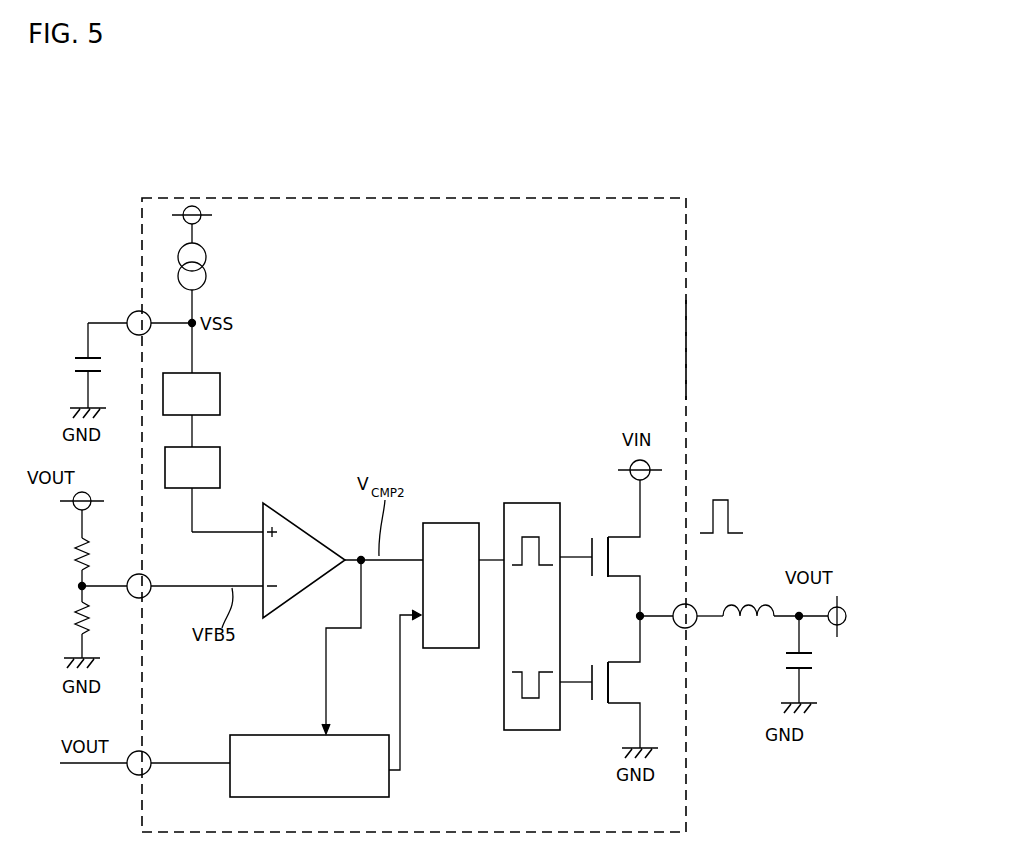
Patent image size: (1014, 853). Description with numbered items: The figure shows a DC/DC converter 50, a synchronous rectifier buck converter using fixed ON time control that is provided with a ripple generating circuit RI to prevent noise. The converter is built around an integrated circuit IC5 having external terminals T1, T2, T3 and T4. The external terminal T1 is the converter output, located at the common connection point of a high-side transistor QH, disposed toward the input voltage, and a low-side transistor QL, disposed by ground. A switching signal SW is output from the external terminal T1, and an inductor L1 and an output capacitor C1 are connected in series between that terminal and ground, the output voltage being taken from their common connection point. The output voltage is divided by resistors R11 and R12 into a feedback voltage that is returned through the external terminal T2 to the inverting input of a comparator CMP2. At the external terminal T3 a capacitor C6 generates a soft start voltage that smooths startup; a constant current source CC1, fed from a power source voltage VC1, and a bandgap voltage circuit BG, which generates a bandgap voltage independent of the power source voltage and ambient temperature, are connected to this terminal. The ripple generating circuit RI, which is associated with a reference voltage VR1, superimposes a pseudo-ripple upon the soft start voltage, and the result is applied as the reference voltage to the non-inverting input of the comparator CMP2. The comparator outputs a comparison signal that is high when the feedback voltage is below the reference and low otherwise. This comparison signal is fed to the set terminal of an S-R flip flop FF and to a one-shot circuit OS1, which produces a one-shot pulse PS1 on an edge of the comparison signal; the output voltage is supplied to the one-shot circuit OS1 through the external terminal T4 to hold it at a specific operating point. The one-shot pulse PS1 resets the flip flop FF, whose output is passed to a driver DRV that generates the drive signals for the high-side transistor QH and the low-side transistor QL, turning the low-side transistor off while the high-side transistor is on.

The DC/DC converter 50 is at (412, 188).
The integrated circuit IC5 is at (686, 349).
The power source voltage VC1 is at (211, 224).
The constant current source CC1 is at (218, 308).
The external terminal T3 is at (140, 312).
The capacitor C6 is at (71, 370).
The bandgap voltage circuit BG is at (220, 395).
The reference voltage VR1 is at (220, 459).
The ripple generating circuit RI is at (226, 534).
The resistor R11 is at (60, 548).
The resistor R12 is at (66, 627).
The external terminal T2 is at (172, 575).
The comparator CMP2 is at (343, 560).
The one-shot pulse PS1 is at (412, 690).
The S-R flip flop FF is at (463, 573).
The driver DRV is at (532, 604).
The high-side transistor QH is at (609, 548).
The low-side transistor QL is at (609, 687).
The external terminal T1 is at (681, 628).
The switching signal SW is at (708, 612).
The inductor L1 is at (775, 595).
The output capacitor C1 is at (785, 664).
The external terminal T4 is at (145, 774).
The one-shot circuit OS1 is at (309, 754).